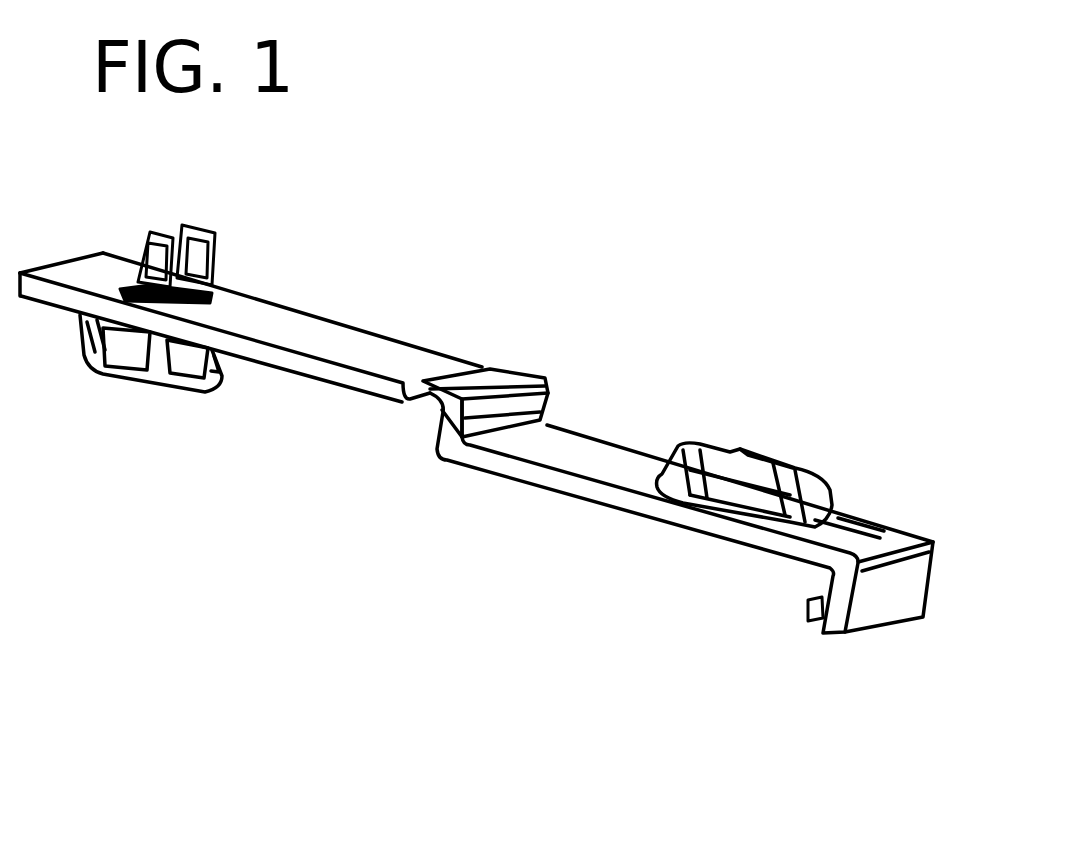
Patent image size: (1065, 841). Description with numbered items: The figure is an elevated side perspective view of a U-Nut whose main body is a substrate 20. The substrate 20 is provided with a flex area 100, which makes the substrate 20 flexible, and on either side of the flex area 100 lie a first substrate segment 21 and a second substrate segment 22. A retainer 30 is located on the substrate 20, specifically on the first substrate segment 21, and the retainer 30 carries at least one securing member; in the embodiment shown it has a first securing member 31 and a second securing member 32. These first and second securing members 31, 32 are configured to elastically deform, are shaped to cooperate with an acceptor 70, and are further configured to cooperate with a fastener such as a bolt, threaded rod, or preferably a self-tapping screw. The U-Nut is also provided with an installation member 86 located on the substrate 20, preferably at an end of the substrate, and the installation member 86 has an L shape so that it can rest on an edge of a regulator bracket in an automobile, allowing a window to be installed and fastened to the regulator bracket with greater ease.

The substrate 20 is at (476, 445).
The first substrate segment 21 is at (310, 328).
The second substrate segment 22 is at (605, 476).
The retainer 30 is at (176, 301).
The first securing member 31 is at (157, 273).
The second securing member 32 is at (192, 252).
The acceptor 70 is at (783, 443).
The installation member 86 is at (820, 633).
The flex area 100 is at (475, 378).